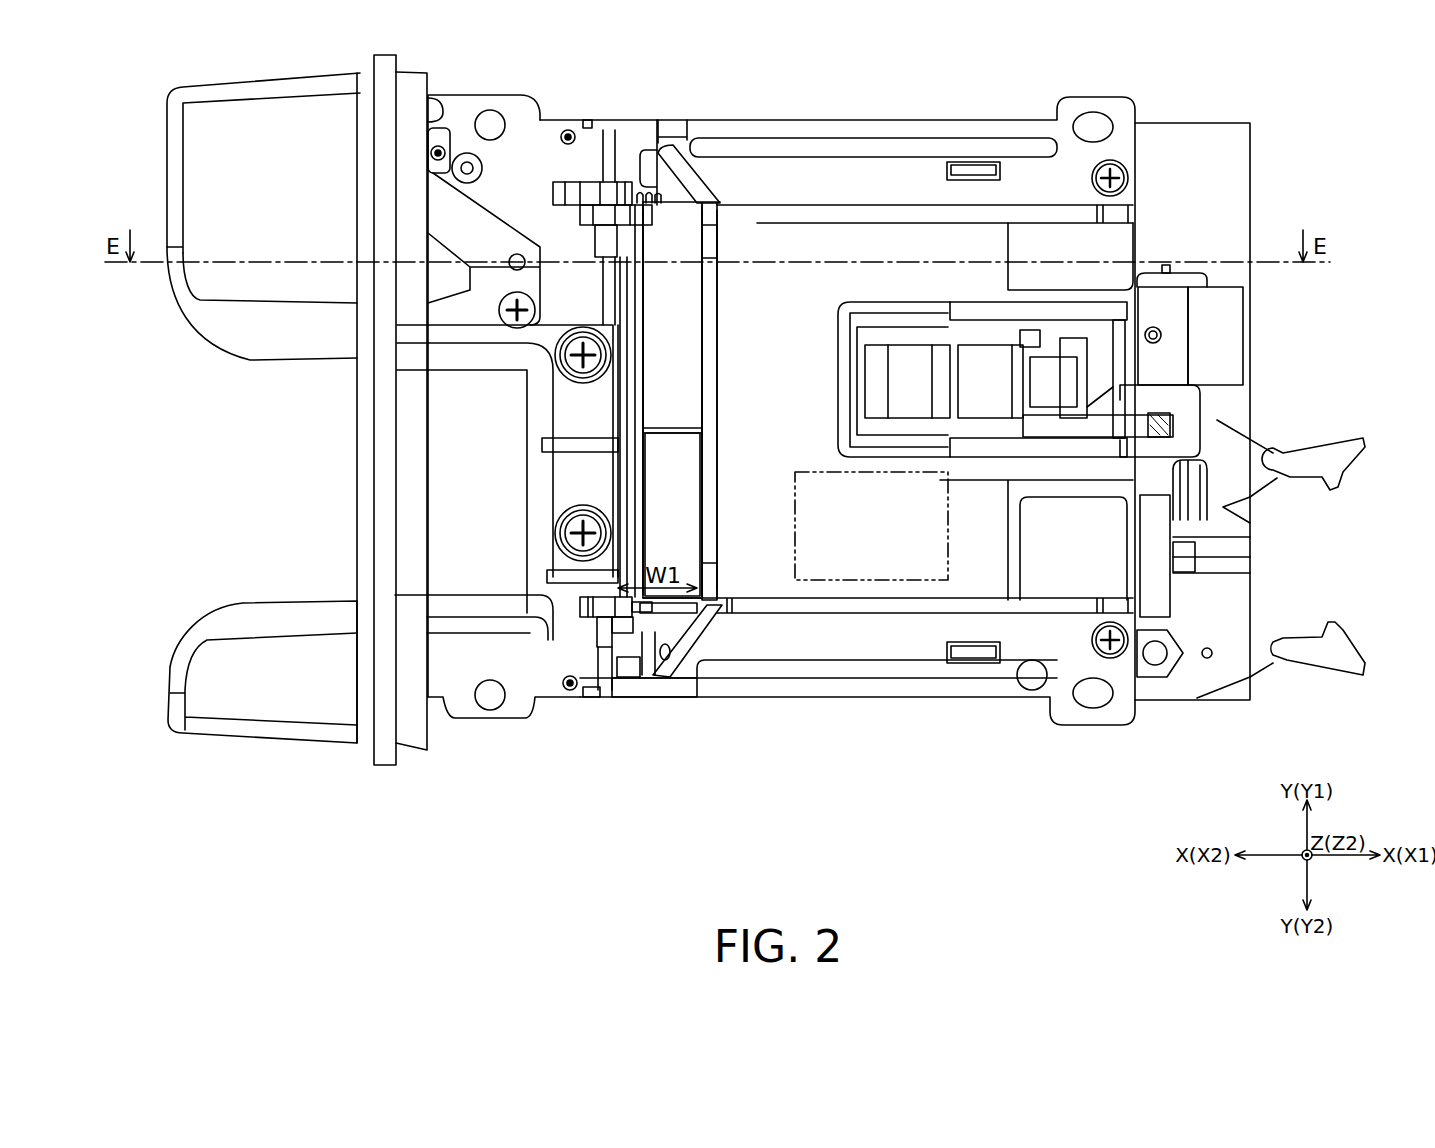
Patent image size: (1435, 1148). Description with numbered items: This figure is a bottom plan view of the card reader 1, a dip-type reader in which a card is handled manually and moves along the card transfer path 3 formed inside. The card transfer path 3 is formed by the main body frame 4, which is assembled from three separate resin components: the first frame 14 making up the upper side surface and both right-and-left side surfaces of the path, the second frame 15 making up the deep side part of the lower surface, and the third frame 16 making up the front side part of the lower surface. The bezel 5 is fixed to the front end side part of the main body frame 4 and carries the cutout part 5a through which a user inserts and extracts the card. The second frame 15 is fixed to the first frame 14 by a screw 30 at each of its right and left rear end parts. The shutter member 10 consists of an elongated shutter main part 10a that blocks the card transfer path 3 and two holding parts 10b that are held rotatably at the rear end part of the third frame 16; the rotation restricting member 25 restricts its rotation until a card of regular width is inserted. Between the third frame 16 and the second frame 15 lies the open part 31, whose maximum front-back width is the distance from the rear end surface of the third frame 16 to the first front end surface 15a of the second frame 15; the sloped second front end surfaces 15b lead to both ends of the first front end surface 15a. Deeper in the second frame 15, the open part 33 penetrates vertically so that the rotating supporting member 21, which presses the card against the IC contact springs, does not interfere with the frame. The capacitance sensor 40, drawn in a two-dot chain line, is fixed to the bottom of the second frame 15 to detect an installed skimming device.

The card reader 1 is at (1370, 73).
The card transfer path 3 is at (678, 415).
The main body frame 4 is at (895, 394).
The bezel 5 is at (283, 742).
The cutout part 5a is at (196, 491).
The shutter member 10 is at (640, 245).
The shutter main part 10a is at (643, 355).
The holding parts 10b is at (577, 217).
The first frame 14 is at (938, 120).
The second frame 15 is at (795, 157).
The first front end surface 15a is at (693, 337).
The second front end surfaces 15b is at (657, 143).
The third frame 16 is at (476, 95).
The supporting member 21 is at (922, 440).
The rotation restricting member 25 is at (622, 690).
The screw 30 is at (1092, 178).
The open part 31 is at (683, 460).
The open part 33 is at (870, 437).
The capacitance sensor 40 is at (853, 582).